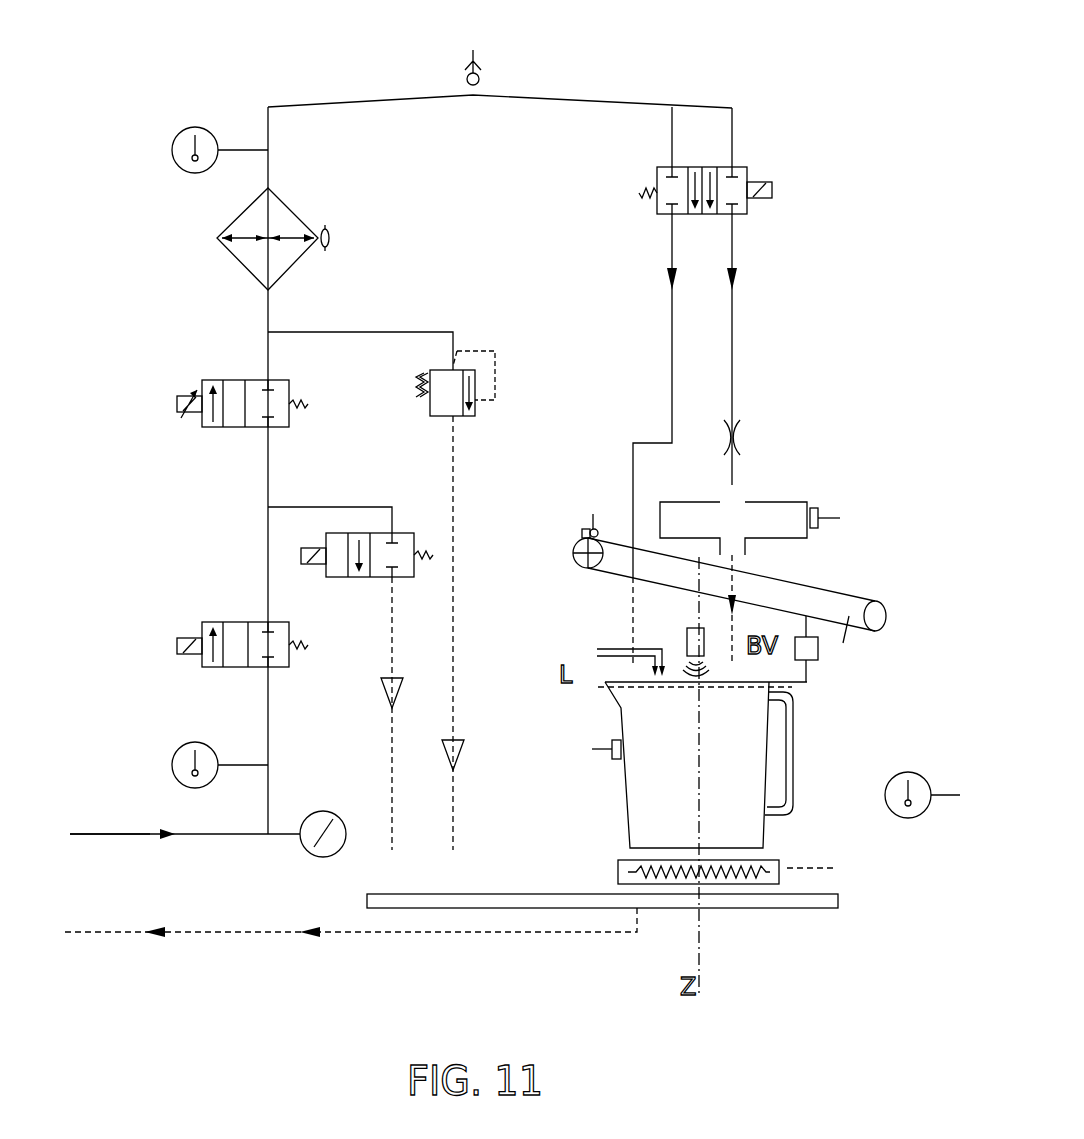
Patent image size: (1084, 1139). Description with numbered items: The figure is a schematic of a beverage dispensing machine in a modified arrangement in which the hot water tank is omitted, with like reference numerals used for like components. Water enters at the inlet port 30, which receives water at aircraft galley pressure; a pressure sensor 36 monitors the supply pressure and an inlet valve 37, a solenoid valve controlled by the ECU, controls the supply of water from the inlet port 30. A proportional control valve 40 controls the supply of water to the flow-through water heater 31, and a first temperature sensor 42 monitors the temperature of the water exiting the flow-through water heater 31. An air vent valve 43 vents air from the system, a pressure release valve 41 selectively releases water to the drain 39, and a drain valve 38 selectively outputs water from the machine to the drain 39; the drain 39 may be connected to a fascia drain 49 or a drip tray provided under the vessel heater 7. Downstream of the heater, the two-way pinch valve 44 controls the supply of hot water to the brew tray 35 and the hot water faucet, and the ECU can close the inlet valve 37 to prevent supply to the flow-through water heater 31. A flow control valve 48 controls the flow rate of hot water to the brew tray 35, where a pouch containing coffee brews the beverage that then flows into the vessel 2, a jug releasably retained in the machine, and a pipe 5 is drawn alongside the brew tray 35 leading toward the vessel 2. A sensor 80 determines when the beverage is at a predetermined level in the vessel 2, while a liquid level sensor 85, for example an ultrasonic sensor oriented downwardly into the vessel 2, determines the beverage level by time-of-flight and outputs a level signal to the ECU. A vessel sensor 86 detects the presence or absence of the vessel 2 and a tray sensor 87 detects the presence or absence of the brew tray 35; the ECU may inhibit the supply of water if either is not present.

The vessel 2 is at (632, 812).
The pipe 5 is at (886, 600).
The vessel heater 7 is at (620, 870).
The inlet port 30 is at (151, 805).
The flow-through water heater 31 is at (296, 224).
The brew tray 35 is at (771, 480).
The pressure sensor 36 is at (346, 797).
The inlet valve 37 is at (223, 612).
The drain valve 38 is at (357, 590).
The drain 39 is at (131, 917).
The proportional control valve 40 is at (223, 360).
The pressure release valve 41 is at (419, 408).
The first temperature sensor 42 is at (172, 135).
The air vent valve 43 is at (443, 68).
The two-way pinch valve 44 is at (750, 158).
The flow control valve 48 is at (746, 418).
The fascia drain 49 is at (481, 892).
The sensor 80 is at (600, 642).
The liquid level sensor 85 is at (685, 634).
The vessel sensor 86 is at (821, 656).
The tray sensor 87 is at (834, 507).